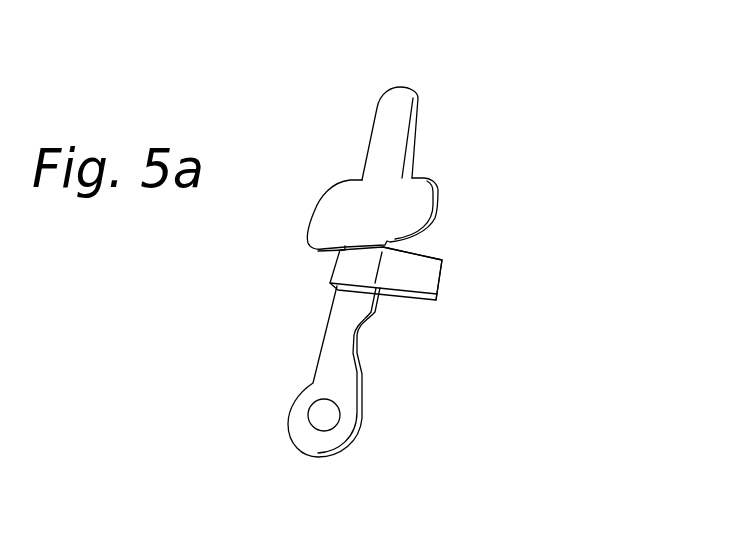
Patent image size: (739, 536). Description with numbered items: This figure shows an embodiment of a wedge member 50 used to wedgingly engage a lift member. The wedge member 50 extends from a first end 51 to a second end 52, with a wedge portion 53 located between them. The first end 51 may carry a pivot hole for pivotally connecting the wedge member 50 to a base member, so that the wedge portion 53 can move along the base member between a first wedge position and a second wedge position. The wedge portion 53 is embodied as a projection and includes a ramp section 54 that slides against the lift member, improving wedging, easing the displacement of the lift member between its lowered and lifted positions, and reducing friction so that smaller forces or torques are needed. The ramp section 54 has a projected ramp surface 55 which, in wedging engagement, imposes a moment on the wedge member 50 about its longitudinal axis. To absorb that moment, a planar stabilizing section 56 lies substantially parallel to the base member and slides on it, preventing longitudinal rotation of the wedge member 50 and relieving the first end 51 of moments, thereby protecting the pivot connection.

The wedge member 50 is at (419, 95).
The first end 51 is at (310, 443).
The second end 52 is at (370, 137).
The wedge portion 53 is at (350, 268).
The ramp section 54 is at (433, 275).
The projected ramp surface 55 is at (414, 210).
The planar stabilizing section 56 is at (327, 212).